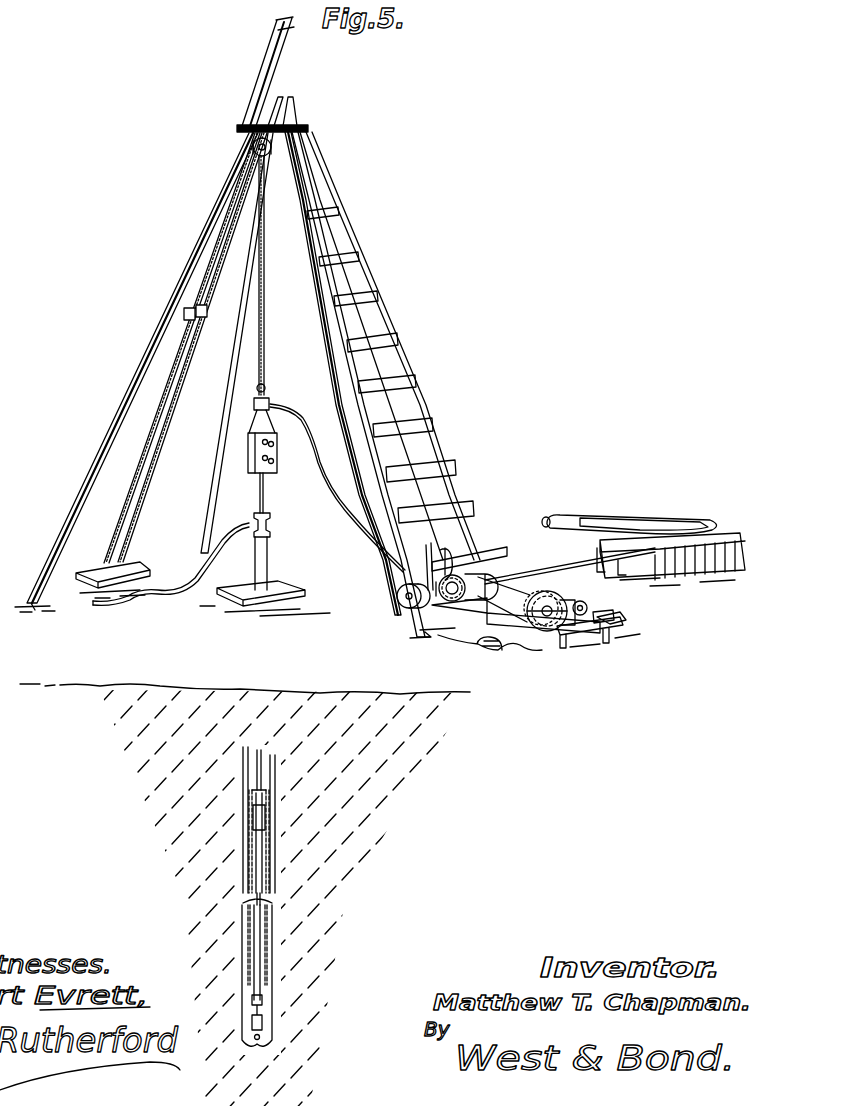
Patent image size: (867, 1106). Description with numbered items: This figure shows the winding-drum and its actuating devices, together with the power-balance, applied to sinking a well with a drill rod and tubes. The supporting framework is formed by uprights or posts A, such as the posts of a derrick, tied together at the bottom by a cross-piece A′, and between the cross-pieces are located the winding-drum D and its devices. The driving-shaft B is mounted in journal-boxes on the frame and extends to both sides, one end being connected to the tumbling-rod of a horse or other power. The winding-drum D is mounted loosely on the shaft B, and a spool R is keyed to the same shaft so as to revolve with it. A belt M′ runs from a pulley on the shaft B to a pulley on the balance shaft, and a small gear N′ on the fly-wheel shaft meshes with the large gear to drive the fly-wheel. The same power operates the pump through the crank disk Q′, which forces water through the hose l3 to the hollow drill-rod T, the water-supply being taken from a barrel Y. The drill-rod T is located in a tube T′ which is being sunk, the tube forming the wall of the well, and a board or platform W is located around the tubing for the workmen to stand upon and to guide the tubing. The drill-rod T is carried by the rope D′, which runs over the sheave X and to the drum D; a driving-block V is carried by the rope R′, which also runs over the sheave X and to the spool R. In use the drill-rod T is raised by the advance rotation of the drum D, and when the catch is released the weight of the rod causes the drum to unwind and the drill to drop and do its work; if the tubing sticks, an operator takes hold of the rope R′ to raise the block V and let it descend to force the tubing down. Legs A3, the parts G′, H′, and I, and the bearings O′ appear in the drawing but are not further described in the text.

The sheave X is at (254, 149).
The tripod legs A3 is at (144, 372).
The hollow drill-rod T is at (171, 365).
The tube T′ is at (288, 865).
The rope D′ is at (351, 327).
The spool R is at (337, 504).
The hose l3 is at (344, 504).
The bearings O′ is at (171, 564).
The board or platform W is at (265, 593).
The uprights or posts A is at (382, 385).
The cross-piece A′ is at (516, 585).
The guide pulley G′ is at (440, 603).
The winding-drum D is at (468, 572).
The driving-shaft B is at (566, 585).
The lever H′ is at (454, 554).
The rod I is at (420, 555).
The small gear N′ is at (538, 617).
The belt M′ is at (547, 590).
The disk Q′ is at (587, 602).
The barrel Y is at (598, 628).
The rope R′ is at (490, 654).
The driving-block V is at (257, 982).